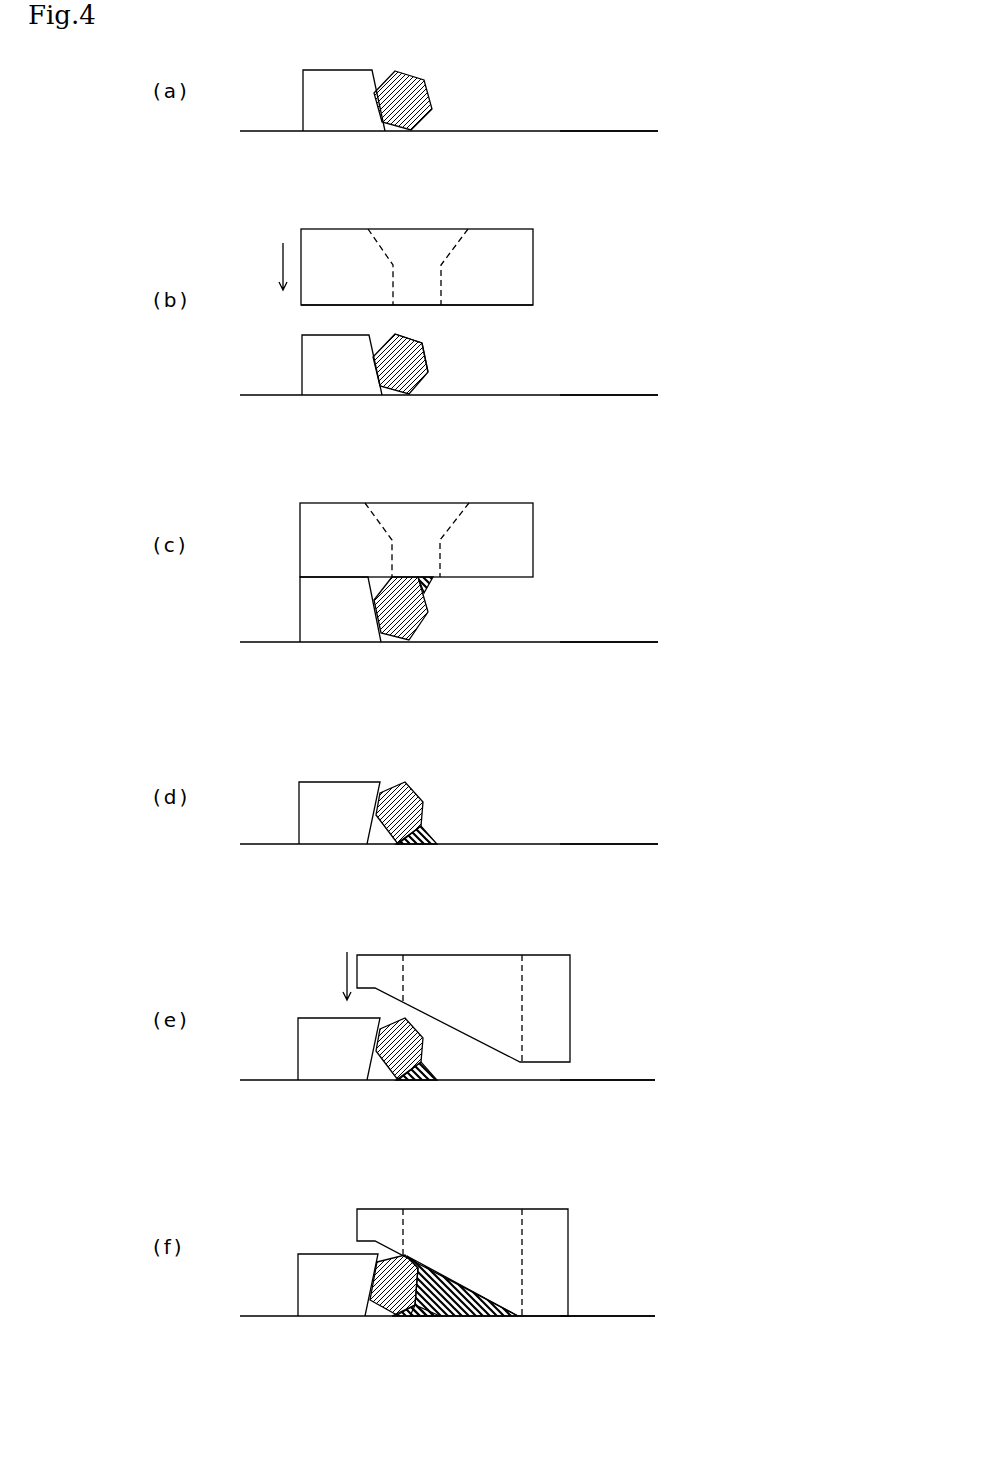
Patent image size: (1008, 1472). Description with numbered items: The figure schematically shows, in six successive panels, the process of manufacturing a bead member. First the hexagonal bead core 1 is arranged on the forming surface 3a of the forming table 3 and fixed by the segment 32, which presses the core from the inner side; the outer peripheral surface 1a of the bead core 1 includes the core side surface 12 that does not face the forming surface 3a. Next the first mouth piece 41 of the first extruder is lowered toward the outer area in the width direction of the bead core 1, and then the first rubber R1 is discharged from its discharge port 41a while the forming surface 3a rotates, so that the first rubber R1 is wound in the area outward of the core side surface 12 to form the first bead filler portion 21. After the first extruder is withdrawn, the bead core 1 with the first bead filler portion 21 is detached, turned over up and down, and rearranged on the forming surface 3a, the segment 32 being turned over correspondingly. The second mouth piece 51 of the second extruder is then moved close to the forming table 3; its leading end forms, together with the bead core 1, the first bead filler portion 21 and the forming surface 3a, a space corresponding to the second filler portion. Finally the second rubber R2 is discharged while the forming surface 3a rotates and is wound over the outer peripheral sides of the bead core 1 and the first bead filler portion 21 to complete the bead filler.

The bead core 1 is at (400, 108).
The outer peripheral surface 1a is at (427, 373).
The core side surface 12 is at (407, 338).
The forming table 3 is at (648, 121).
The forming surface 3a is at (592, 131).
The segment 32 is at (303, 100).
The first mouth piece 41 is at (533, 263).
The discharge port 41a is at (418, 306).
The first bead filler portion 21 is at (417, 846).
The first rubber R1 is at (429, 588).
The second mouth piece 51 is at (570, 1013).
The second rubber R2 is at (467, 1317).